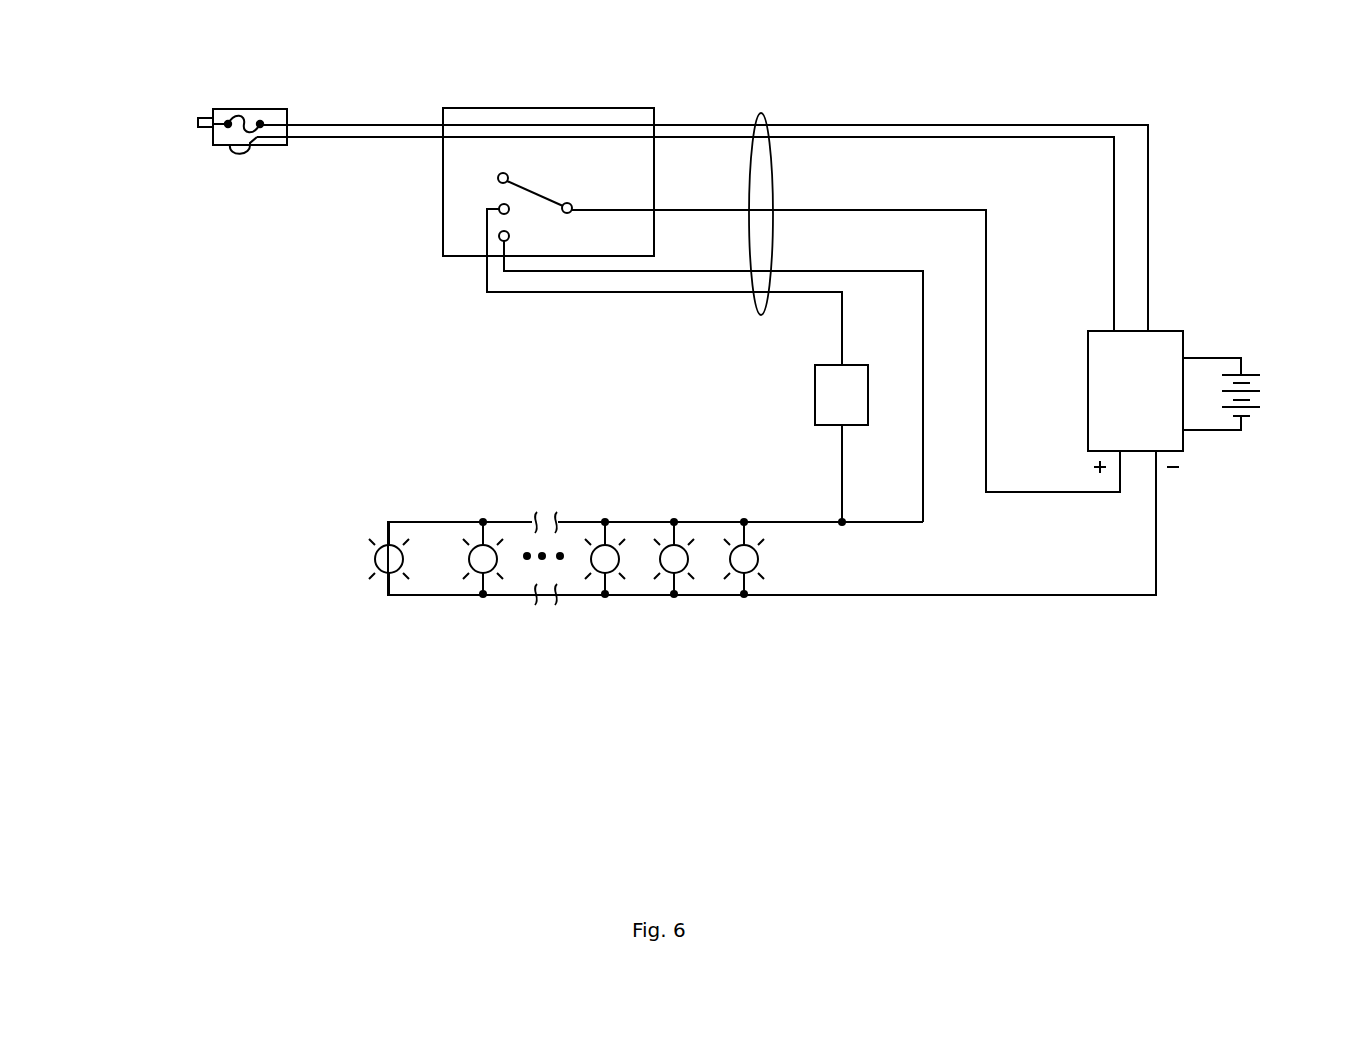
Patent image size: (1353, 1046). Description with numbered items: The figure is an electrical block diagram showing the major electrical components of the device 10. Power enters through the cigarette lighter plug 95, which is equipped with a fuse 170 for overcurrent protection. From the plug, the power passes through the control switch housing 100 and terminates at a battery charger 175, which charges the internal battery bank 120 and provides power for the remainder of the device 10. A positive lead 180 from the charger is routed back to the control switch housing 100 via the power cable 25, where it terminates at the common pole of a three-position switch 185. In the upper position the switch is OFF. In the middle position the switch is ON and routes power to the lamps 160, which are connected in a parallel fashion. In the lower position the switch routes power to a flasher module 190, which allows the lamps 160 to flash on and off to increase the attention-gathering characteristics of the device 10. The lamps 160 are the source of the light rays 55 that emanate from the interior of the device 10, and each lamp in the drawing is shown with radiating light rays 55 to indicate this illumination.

The device 10 is at (244, 779).
The power cable 25 is at (767, 120).
The light rays 55 is at (372, 545).
The cigarette lighter plug 95 is at (230, 145).
The control switch housing 100 is at (648, 107).
The internal battery bank 120 is at (1222, 358).
The lamps 160 is at (392, 560).
The fuse 170 is at (248, 120).
The battery charger 175 is at (1156, 345).
The positive lead 180 is at (1088, 493).
The three-position switch 185 is at (472, 206).
The flasher module 190 is at (840, 395).